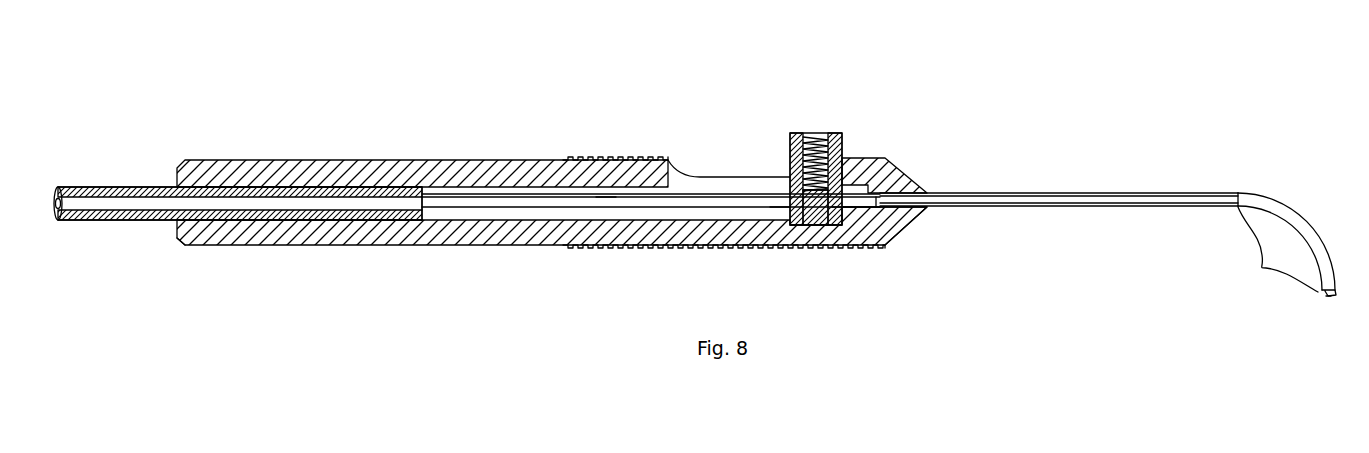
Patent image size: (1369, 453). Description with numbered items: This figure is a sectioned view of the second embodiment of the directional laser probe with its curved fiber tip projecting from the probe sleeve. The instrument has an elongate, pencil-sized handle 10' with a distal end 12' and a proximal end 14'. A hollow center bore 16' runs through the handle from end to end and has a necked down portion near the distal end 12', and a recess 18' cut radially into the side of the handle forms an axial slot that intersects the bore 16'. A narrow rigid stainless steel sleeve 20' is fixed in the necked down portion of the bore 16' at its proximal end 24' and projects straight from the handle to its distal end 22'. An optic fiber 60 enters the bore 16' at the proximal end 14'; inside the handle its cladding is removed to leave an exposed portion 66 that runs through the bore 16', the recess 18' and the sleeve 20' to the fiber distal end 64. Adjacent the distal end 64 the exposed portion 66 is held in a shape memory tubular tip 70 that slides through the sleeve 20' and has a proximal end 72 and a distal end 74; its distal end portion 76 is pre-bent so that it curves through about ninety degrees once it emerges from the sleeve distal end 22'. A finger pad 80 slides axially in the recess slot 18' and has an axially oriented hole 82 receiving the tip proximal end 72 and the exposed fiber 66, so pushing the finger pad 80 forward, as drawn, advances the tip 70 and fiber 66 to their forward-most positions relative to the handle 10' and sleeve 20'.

The handle 10' is at (552, 157).
The distal end of handle 12' is at (910, 181).
The proximal end of handle 14' is at (148, 259).
The center bore 16' is at (635, 134).
The recess 18' is at (729, 121).
The sleeve 20' is at (1059, 241).
The distal end of sleeve 22' is at (1246, 136).
The proximal end of sleeve 24' is at (908, 253).
The optic fiber 60 is at (100, 183).
The distal end of optic fiber 64 is at (1329, 297).
The exposed portion of optic fiber 66 is at (606, 200).
The tubular tip 70 is at (1313, 213).
The proximal end of tubular tip 72 is at (790, 201).
The distal end of tubular tip 74 is at (1337, 293).
The distal end portion of tubular tip 76 is at (1275, 254).
The finger pad 80 is at (840, 133).
The axially oriented hole 82 is at (832, 203).